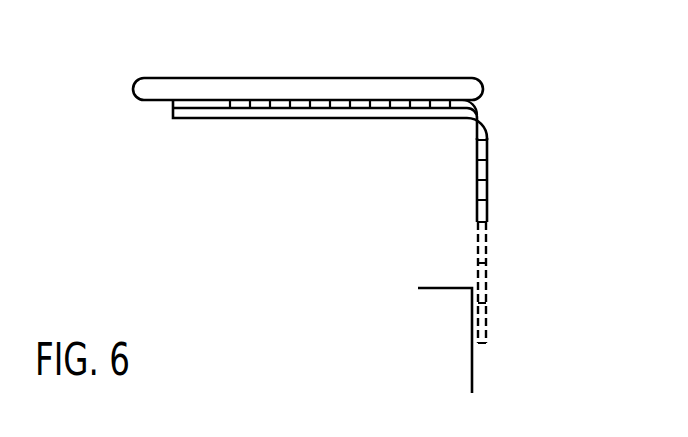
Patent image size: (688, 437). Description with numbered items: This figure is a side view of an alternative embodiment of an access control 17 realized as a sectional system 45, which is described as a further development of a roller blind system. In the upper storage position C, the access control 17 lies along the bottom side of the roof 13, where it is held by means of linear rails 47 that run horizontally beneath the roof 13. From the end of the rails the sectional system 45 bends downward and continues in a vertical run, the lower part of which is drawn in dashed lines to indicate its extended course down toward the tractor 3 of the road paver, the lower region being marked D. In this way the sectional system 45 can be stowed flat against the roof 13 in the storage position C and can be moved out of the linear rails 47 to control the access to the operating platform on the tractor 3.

The roof 13 is at (368, 72).
The sectional system 45 is at (536, 126).
The linear rails 47 is at (199, 126).
The upper storage position C is at (240, 117).
The access control 17 is at (494, 193).
The hidden lower channel region D is at (499, 358).
The tractor 3 is at (449, 340).